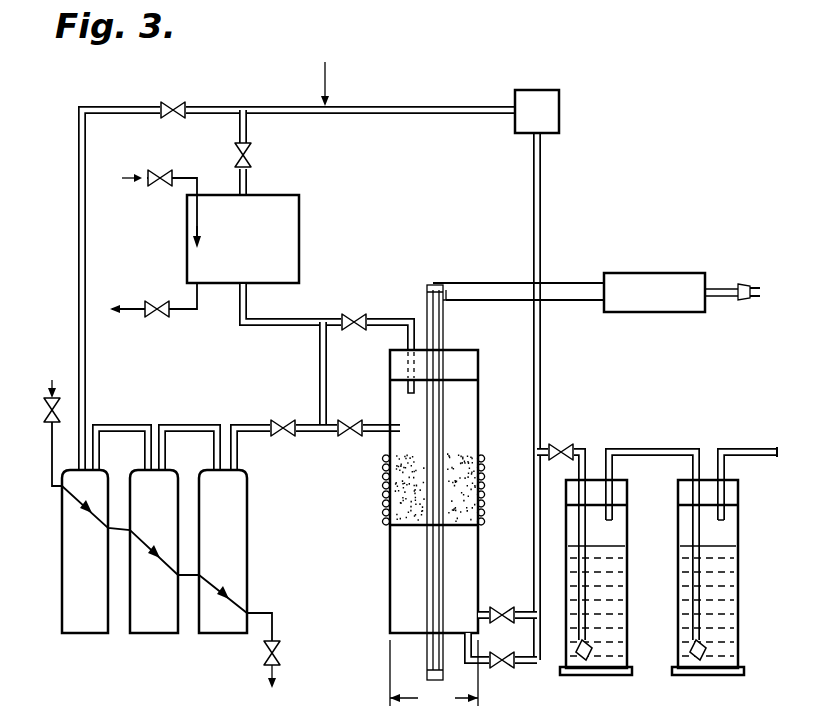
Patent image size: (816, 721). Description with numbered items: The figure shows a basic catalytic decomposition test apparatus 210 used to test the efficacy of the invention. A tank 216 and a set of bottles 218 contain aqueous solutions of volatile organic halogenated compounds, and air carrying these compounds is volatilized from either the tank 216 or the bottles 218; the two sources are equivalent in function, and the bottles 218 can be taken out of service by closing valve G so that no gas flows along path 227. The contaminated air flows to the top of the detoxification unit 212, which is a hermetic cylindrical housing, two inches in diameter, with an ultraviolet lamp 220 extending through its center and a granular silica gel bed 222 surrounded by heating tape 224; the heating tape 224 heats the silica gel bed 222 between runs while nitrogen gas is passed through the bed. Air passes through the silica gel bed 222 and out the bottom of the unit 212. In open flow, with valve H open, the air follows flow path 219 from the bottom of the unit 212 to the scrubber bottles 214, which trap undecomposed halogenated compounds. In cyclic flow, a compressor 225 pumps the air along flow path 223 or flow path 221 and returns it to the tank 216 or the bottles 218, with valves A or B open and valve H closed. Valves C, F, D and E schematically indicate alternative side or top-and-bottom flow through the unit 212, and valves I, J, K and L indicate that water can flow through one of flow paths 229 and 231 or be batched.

The catalytic decomposition test apparatus 210 is at (606, 181).
The detoxification unit 212 is at (481, 412).
The scrubber bottles 214 is at (677, 566).
The tank 216 is at (187, 240).
The bottles 218 is at (261, 503).
The flow path 219 is at (608, 470).
The ultraviolet lamp 220 is at (428, 298).
The flow path 221 is at (114, 107).
The granular silica gel bed 222 is at (410, 520).
The flow path 223 is at (252, 187).
The heating tape 224 is at (385, 502).
The compressor 225 is at (541, 89).
The path 227 is at (256, 424).
The flow path 229 is at (262, 608).
The flow path 231 is at (190, 303).